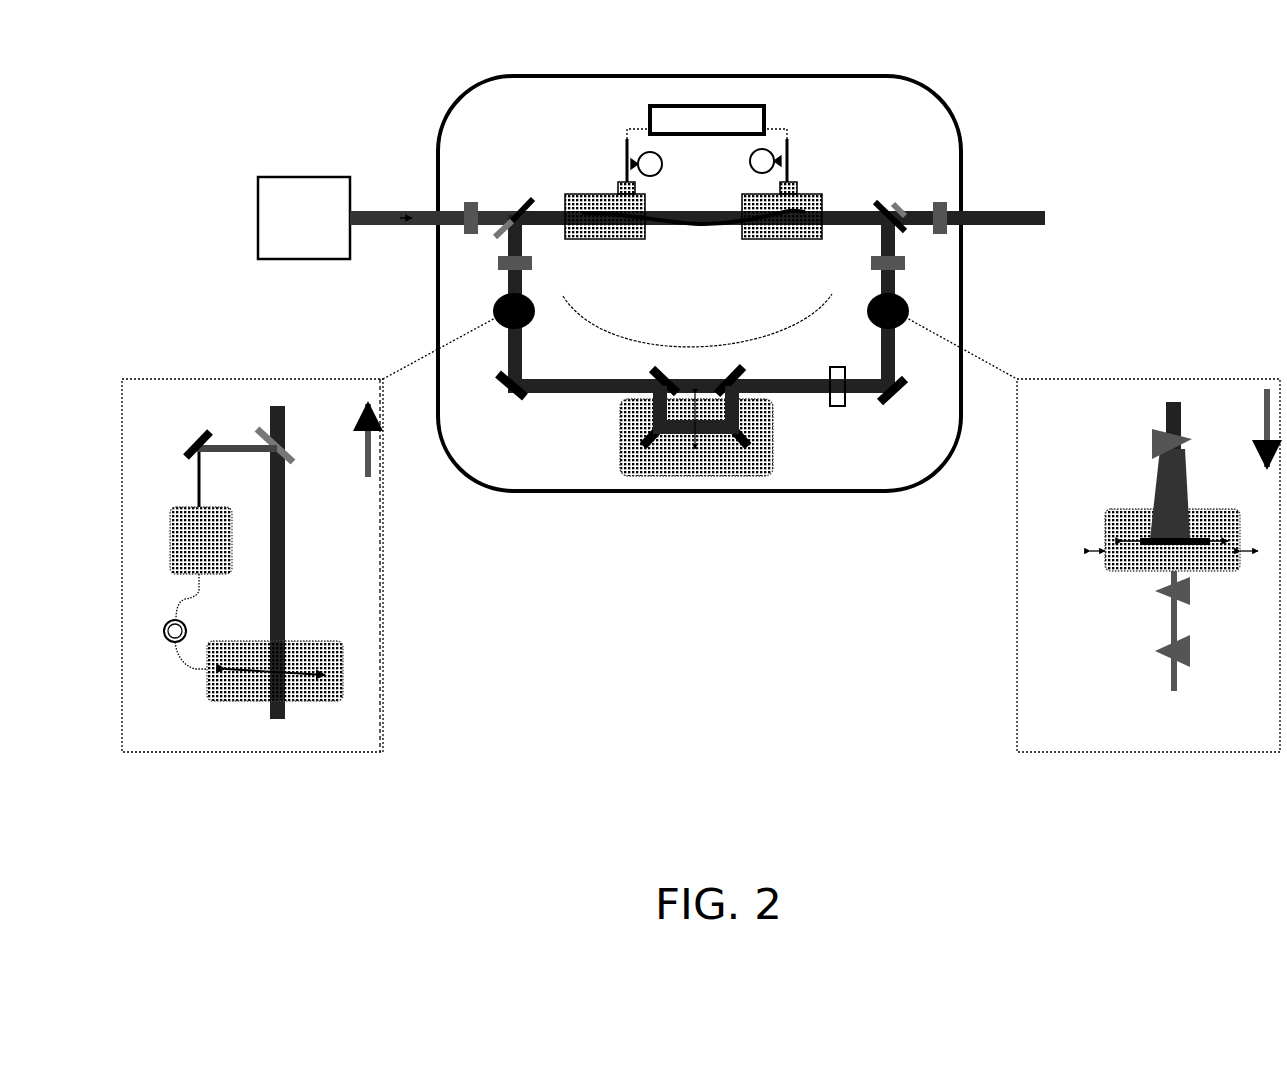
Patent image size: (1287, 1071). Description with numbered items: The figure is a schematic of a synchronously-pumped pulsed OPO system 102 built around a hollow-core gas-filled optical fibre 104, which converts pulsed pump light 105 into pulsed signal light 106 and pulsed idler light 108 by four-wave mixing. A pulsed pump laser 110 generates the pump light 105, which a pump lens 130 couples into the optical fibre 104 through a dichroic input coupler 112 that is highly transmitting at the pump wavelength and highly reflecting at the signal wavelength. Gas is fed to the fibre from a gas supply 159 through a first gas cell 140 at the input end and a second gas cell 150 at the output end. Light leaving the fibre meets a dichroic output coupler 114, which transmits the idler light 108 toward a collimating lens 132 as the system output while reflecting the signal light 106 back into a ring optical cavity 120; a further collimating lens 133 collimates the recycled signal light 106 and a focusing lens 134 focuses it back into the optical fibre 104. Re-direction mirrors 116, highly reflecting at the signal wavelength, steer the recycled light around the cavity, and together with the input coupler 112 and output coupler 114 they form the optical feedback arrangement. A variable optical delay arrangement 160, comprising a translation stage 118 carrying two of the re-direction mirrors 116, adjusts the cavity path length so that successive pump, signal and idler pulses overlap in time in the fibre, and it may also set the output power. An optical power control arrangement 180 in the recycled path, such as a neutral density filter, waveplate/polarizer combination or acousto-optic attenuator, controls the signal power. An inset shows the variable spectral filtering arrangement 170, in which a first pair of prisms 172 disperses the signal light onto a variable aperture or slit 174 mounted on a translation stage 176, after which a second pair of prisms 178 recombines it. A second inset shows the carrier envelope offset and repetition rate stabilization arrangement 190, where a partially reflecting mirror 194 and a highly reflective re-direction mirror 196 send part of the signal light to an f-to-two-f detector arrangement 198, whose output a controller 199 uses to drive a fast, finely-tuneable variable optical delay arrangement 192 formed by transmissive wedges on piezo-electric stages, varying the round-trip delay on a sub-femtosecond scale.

The synchronously-pumped pulsed OPO system 102 is at (402, 150).
The hollow-core gas-filled optical fibre 104 is at (688, 232).
The pulsed pump light 105 is at (385, 230).
The pulsed signal light 106 is at (858, 394).
The pulsed idler light 108 is at (1045, 219).
The pulsed pump laser 110 is at (258, 208).
The dichroic input coupler 112 is at (520, 197).
The dichroic output coupler 114 is at (885, 200).
The re-direction mirrors 116 is at (510, 400).
The translation stage 118 is at (800, 446).
The optical cavity 120 is at (553, 418).
The pump lens 130 is at (472, 238).
The collimating lens 132 is at (948, 236).
The further collimating lens 133 is at (898, 268).
The focusing lens 134 is at (497, 290).
The first gas cell 140 is at (604, 242).
The second gas cell 150 is at (783, 242).
The gas supply 159 is at (737, 107).
The variable optical delay arrangement 160 is at (612, 466).
The variable spectral filtering arrangement 170 is at (1148, 565).
The first pair of prisms 172 is at (1190, 497).
The variable aperture or slit 174 is at (1148, 535).
The translation stage 176 is at (1115, 578).
The second pair of prisms 178 is at (1190, 597).
The optical power control arrangement 180 is at (838, 408).
The carrier envelope offset and repetition rate stabilization arrangement 190 is at (252, 565).
The fast, finely-tuneable variable optical delay arrangement 192 is at (305, 700).
The partially reflecting mirror 194 is at (292, 465).
The highly reflective re-direction mirror 196 is at (190, 436).
The f-2f detector arrangement 198 is at (168, 556).
The controller 199 is at (162, 641).